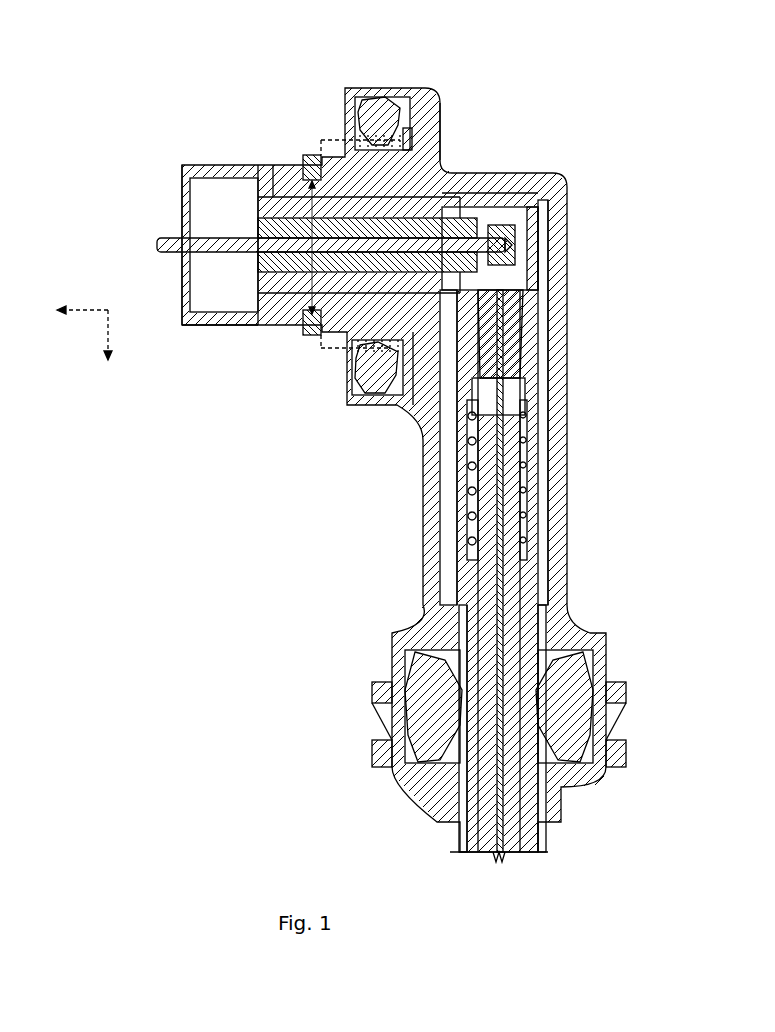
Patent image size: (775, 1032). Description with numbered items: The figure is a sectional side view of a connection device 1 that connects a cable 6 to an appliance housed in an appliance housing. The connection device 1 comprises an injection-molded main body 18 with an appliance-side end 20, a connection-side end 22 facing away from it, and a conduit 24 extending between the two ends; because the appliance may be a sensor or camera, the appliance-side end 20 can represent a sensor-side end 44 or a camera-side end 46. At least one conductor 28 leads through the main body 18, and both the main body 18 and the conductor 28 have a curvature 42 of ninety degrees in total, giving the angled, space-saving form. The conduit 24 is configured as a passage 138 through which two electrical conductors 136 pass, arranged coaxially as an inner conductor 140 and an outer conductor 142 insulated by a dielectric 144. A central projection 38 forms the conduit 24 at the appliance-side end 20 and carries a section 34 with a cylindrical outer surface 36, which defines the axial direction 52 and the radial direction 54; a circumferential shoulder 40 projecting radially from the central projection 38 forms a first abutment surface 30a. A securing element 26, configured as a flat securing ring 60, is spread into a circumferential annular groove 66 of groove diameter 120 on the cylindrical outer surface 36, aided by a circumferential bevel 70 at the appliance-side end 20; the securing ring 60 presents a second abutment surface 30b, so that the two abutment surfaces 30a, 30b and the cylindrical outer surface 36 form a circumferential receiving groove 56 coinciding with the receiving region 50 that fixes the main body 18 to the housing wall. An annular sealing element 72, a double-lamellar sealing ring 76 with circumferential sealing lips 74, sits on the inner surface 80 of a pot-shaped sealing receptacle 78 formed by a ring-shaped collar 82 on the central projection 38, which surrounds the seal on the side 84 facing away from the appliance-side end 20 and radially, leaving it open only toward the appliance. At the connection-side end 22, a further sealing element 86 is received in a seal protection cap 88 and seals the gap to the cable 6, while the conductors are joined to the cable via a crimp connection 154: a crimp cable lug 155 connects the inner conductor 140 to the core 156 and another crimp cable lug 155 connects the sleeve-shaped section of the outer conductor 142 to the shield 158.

The connection device 1 is at (128, 40).
The cable 6 is at (499, 607).
The main body 18 is at (562, 192).
The appliance-side end 20 is at (233, 302).
The connection-side end 22 is at (546, 748).
The conduit 24 is at (170, 242).
The securing element 26 is at (340, 196).
The conductor 28 is at (283, 233).
The first abutment surface 30a is at (428, 81).
The second abutment surface 30b is at (428, 81).
The section 34 is at (388, 188).
The cylindrical outer surface 36 is at (428, 81).
The central projection 38 is at (367, 230).
The circumferential shoulder 40 is at (425, 143).
The curvature 42 is at (560, 190).
The sensor-side end 44 is at (233, 302).
The camera-side end 46 is at (268, 360).
The receiving region 50 is at (427, 264).
The axial direction 52 is at (98, 312).
The radial direction 54 is at (93, 308).
The circumferential receiving groove 56 is at (443, 172).
The securing ring 60 is at (340, 196).
The circumferential annular groove 66 is at (311, 155).
The circumferential bevel 70 is at (287, 165).
The annular sealing element 72 is at (332, 409).
The circumferential sealing lips 74 is at (352, 378).
The double-lamellar sealing ring 76 is at (332, 409).
The pot-shaped sealing receptacle 78 is at (428, 81).
The inner surface 80 is at (428, 81).
The ring-shaped collar 82 is at (428, 81).
The side 84 is at (436, 100).
The further sealing element 86 is at (640, 720).
The seal protection cap 88 is at (618, 763).
The groove diameter 120 is at (310, 226).
The electrical conductors 136 is at (283, 233).
The passage 138 is at (212, 213).
The inner conductor 140 is at (170, 238).
The outer conductor 142 is at (217, 324).
The dielectric 144 is at (500, 283).
The crimp connection 154 is at (582, 377).
The crimp cable lug 155 is at (494, 310).
The core 156 is at (497, 855).
The shield 158 is at (467, 853).